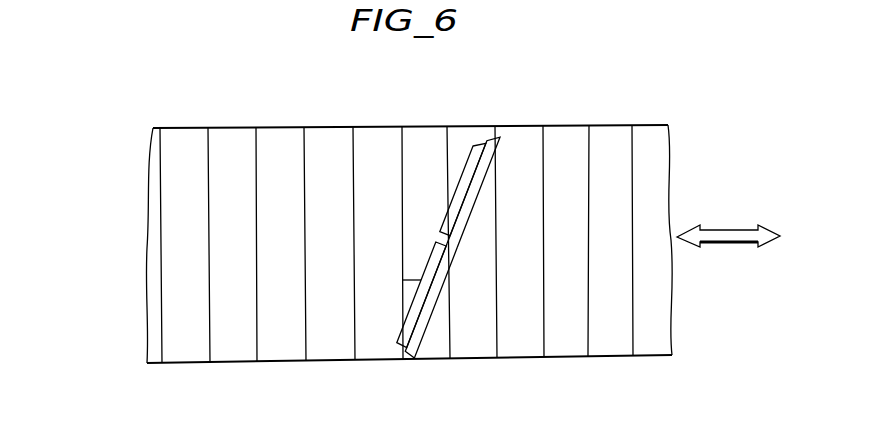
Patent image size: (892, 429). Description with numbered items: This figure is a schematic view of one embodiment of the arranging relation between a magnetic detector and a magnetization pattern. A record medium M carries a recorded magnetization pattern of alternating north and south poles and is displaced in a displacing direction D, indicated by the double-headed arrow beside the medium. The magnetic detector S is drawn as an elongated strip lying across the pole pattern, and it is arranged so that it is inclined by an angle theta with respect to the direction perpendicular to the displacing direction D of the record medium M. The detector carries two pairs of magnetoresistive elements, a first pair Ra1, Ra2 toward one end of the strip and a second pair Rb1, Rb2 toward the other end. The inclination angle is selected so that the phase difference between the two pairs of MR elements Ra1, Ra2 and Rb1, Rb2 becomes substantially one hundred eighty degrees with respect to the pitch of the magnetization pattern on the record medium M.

The record medium M is at (604, 356).
The magnetoresistive sensor S is at (435, 241).
The MR element Ra1 is at (474, 147).
The MR element Ra2 is at (474, 147).
The MR element Rb1 is at (398, 333).
The MR element Rb2 is at (362, 379).
The displacing direction D is at (730, 228).